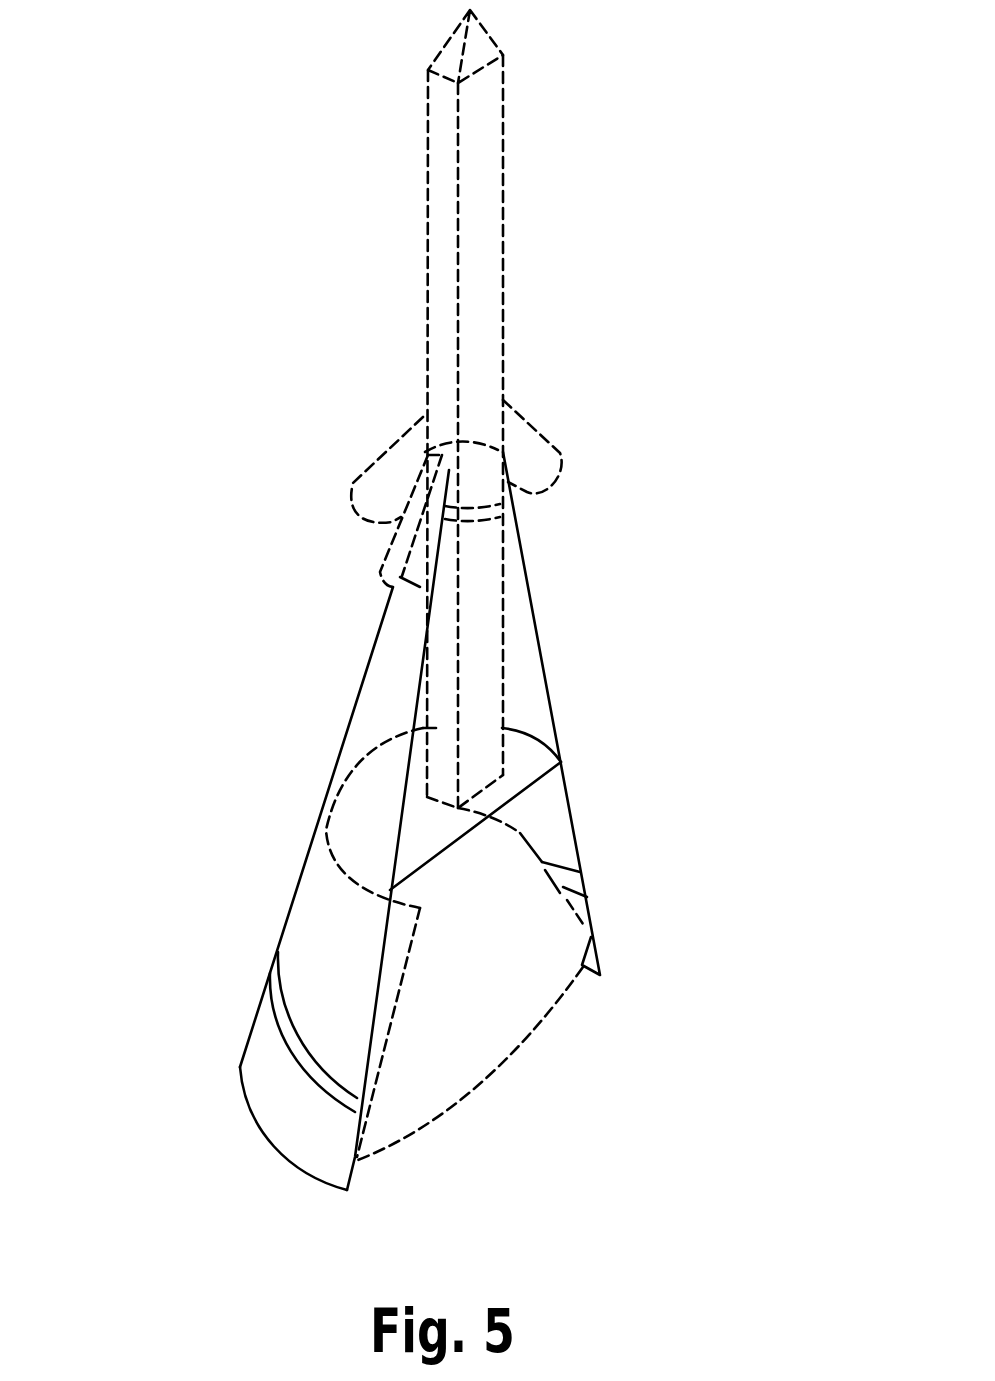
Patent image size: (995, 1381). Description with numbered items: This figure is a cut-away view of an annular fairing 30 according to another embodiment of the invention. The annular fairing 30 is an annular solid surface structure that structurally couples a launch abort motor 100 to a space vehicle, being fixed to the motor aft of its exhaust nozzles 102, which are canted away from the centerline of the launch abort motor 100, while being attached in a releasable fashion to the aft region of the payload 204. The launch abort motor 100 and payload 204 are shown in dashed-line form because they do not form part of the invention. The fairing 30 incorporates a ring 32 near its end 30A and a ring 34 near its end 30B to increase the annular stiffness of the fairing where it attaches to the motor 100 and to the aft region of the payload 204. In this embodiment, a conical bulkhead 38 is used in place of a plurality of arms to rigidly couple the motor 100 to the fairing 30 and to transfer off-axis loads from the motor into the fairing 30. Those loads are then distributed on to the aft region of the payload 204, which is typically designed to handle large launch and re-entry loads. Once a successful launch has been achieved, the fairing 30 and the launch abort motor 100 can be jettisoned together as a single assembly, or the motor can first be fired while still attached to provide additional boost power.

The launch abort motor 100 is at (503, 185).
The exhaust nozzles 102 is at (380, 457).
The end of annular fairing 30A is at (470, 440).
The ring 32 is at (495, 522).
The annular fairing 30 is at (297, 877).
The conical bulkhead 38 is at (522, 760).
The ring 34 is at (563, 878).
The end of annular fairing 30B is at (313, 1177).
The payload 204 is at (482, 982).